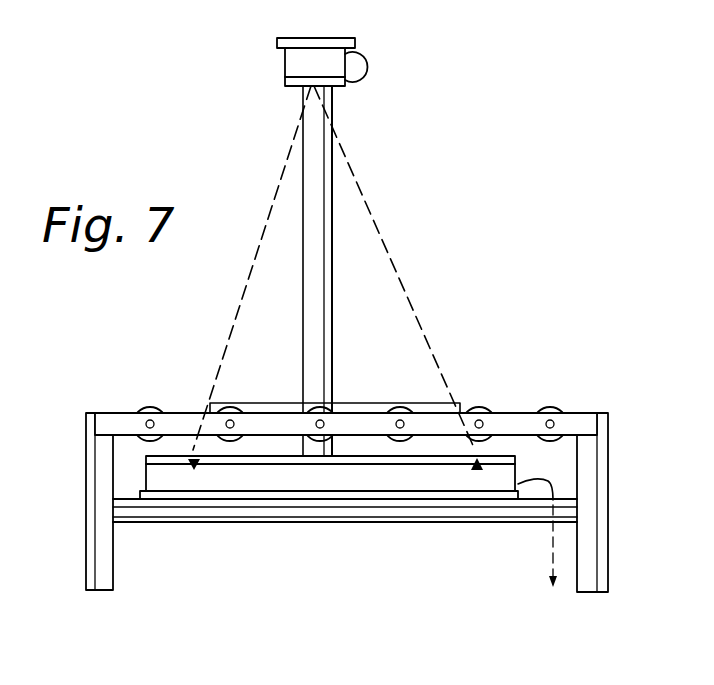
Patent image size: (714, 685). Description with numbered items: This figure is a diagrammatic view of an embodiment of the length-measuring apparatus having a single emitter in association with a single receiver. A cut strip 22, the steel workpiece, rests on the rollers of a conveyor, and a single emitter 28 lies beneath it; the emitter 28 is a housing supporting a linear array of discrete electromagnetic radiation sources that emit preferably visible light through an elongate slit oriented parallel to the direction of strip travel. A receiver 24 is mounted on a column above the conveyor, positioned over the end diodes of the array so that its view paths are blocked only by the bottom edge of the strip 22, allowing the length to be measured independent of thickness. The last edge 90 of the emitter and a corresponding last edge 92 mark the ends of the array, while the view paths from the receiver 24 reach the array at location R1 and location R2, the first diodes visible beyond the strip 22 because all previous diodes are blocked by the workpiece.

The cut strip 22 is at (283, 403).
The receiver 24 is at (298, 56).
The emitter 28 is at (247, 472).
The last edge of emitter 90 is at (165, 452).
The last edge of emitter 92 is at (505, 455).
The location R1 is at (194, 466).
The location R2 is at (477, 464).